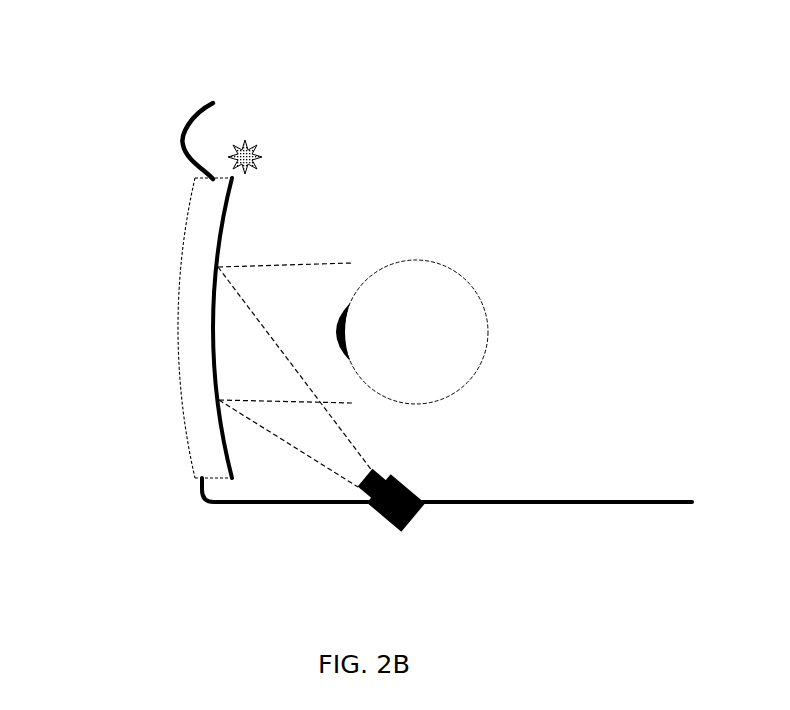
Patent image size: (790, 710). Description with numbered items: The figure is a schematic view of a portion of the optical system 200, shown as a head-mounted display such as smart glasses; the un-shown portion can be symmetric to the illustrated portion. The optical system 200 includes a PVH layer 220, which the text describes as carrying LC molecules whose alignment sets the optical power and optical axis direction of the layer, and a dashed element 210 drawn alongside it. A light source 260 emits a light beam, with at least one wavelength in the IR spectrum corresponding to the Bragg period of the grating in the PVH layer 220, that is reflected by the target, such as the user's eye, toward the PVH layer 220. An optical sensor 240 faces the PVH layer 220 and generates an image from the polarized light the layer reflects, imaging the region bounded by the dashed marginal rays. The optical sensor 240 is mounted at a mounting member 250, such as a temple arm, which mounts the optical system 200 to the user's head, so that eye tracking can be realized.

The optical system 200 is at (223, 58).
The lens 210 is at (192, 412).
The PVH layer 220 is at (221, 221).
The optical sensor 240 is at (415, 520).
The mounting member 250 is at (257, 506).
The light source 260 is at (260, 148).